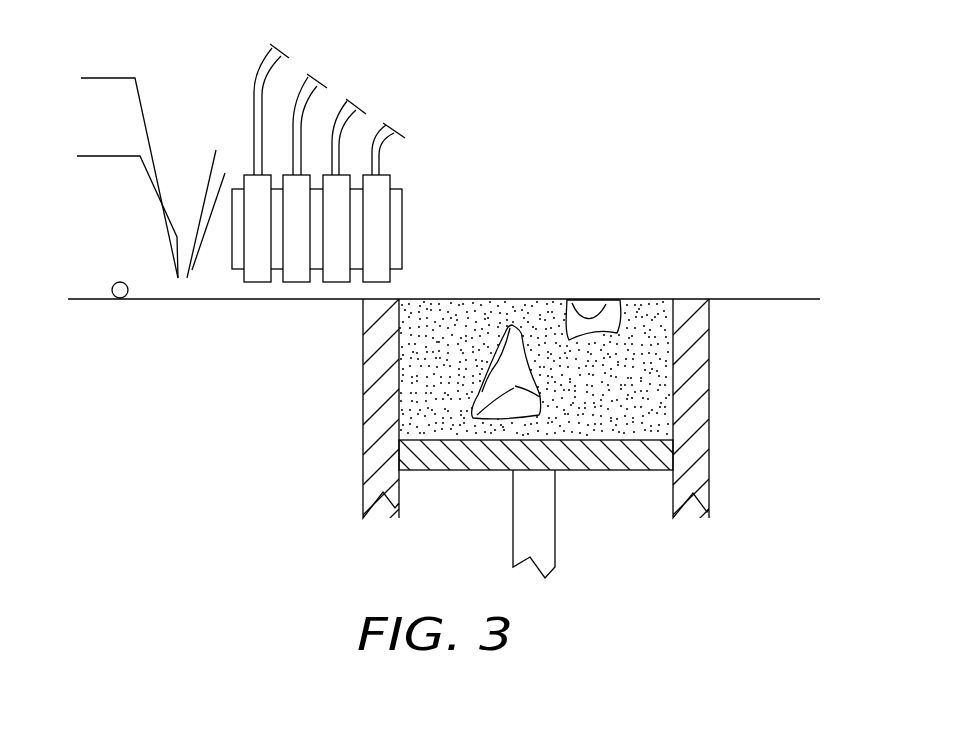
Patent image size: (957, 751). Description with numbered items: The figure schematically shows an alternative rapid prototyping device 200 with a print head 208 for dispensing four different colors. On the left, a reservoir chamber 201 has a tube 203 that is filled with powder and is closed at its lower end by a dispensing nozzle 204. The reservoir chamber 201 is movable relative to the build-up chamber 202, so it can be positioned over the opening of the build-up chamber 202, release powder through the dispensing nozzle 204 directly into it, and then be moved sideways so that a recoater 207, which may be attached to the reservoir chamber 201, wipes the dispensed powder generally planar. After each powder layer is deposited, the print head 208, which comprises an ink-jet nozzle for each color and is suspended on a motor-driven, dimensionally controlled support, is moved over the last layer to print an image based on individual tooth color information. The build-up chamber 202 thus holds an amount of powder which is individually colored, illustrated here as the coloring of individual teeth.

The device 200 is at (633, 65).
The reservoir chamber 201 is at (108, 78).
The build-up chamber 202 is at (656, 299).
The tube 203 is at (148, 183).
The dispensing nozzle 204 is at (180, 276).
The recoater 207 is at (118, 300).
The print head 208 is at (278, 250).